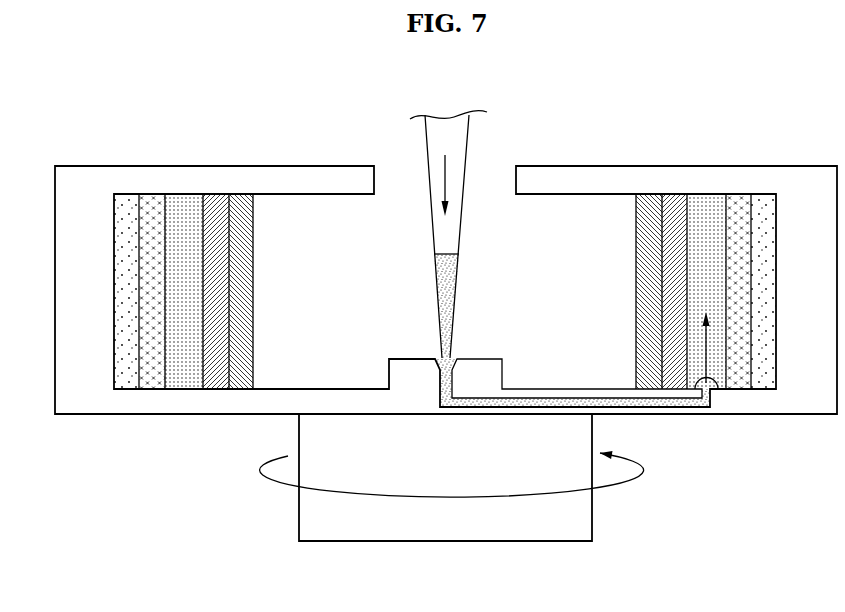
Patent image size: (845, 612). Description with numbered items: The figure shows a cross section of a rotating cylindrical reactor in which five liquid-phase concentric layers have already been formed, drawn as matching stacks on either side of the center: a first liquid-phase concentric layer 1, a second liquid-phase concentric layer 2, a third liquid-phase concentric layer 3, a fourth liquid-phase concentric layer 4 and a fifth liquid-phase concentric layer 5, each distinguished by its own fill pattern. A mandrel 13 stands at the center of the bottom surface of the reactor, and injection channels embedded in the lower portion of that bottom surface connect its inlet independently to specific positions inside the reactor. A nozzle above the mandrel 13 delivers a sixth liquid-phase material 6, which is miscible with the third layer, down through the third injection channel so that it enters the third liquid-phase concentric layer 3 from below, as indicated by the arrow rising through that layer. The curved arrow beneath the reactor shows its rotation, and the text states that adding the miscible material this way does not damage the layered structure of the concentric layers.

The first liquid-phase concentric layer 1 is at (445, 291).
The second liquid-phase concentric layer 2 is at (445, 291).
The third liquid-phase concentric layer 3 is at (445, 291).
The fourth liquid-phase concentric layer 4 is at (445, 291).
The fifth liquid-phase concentric layer 5 is at (445, 291).
The sixth liquid-phase material 6 is at (448, 234).
The mandrel 13 is at (403, 358).